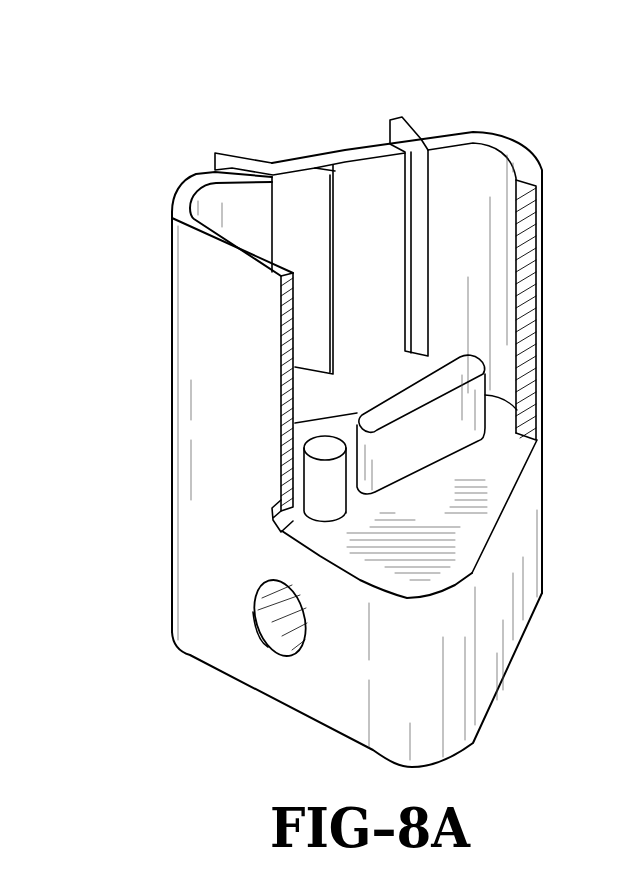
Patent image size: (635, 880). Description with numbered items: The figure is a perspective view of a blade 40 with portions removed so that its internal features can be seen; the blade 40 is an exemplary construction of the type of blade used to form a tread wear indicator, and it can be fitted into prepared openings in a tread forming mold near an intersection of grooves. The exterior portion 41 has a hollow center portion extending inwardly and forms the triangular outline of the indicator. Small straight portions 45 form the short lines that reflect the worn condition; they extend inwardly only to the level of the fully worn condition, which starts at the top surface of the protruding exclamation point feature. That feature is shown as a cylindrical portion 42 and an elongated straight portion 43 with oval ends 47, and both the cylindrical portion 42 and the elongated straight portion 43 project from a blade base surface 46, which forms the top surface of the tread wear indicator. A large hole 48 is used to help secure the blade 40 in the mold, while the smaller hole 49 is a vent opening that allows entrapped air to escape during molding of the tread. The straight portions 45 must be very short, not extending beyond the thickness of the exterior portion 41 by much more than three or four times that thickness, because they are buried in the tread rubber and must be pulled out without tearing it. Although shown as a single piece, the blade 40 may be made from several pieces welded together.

The blade 40 is at (171, 420).
The exterior portion 41 is at (527, 266).
The cylindrical portion 42 is at (323, 492).
The elongated straight portion 43 is at (437, 432).
The small straight portions 45 is at (300, 210).
The blade base surface 46 is at (478, 531).
The oval ends 47 is at (373, 416).
The large hole 48 is at (263, 655).
The smaller hole 49 is at (277, 507).